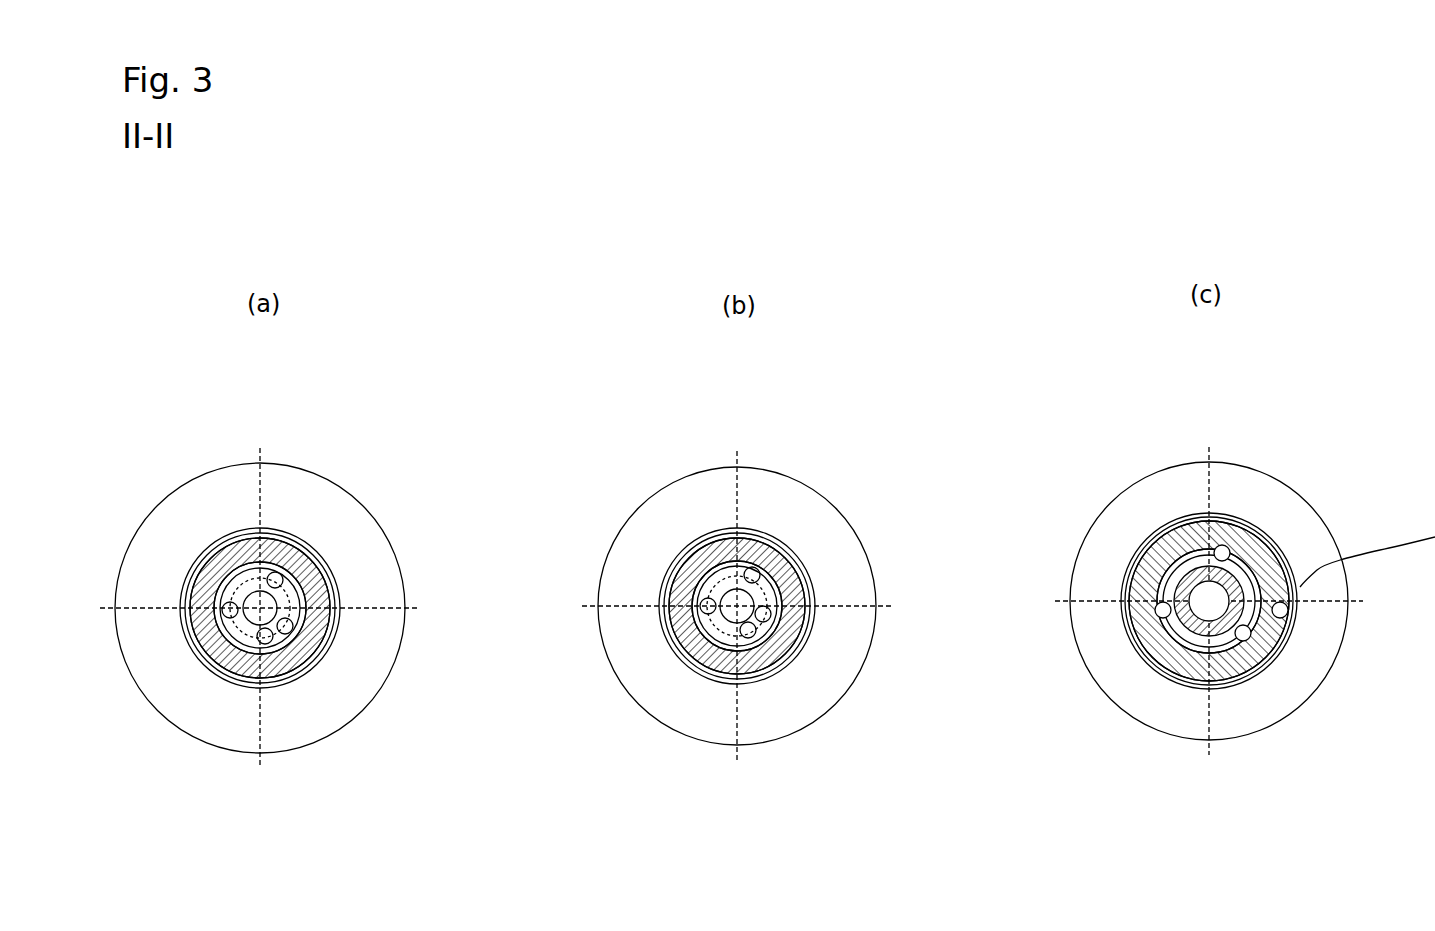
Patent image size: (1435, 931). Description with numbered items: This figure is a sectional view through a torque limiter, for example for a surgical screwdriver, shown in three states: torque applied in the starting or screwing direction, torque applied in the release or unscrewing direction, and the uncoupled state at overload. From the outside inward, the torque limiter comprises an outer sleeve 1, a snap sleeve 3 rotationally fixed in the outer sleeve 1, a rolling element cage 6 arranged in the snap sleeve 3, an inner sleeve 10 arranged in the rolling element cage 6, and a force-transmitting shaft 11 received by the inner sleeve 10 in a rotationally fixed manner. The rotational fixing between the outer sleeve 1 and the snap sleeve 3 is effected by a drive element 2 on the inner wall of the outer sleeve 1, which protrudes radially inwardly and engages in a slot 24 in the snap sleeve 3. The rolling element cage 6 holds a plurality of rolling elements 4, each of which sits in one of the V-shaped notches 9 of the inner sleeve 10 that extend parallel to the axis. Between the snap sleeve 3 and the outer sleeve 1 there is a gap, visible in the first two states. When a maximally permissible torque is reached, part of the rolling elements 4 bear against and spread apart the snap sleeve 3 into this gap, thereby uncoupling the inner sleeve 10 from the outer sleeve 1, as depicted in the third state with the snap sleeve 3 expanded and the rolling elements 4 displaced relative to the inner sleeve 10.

The outer sleeve 1 is at (210, 545).
The drive element 2 is at (340, 605).
The snap sleeve 3 is at (227, 673).
The rolling element 4 is at (277, 570).
The rolling element cage 6 is at (243, 567).
The notches 9 is at (265, 642).
The inner sleeve 10 is at (210, 555).
The force-transmitting shaft 11 is at (282, 624).
The slot 24 is at (320, 600).